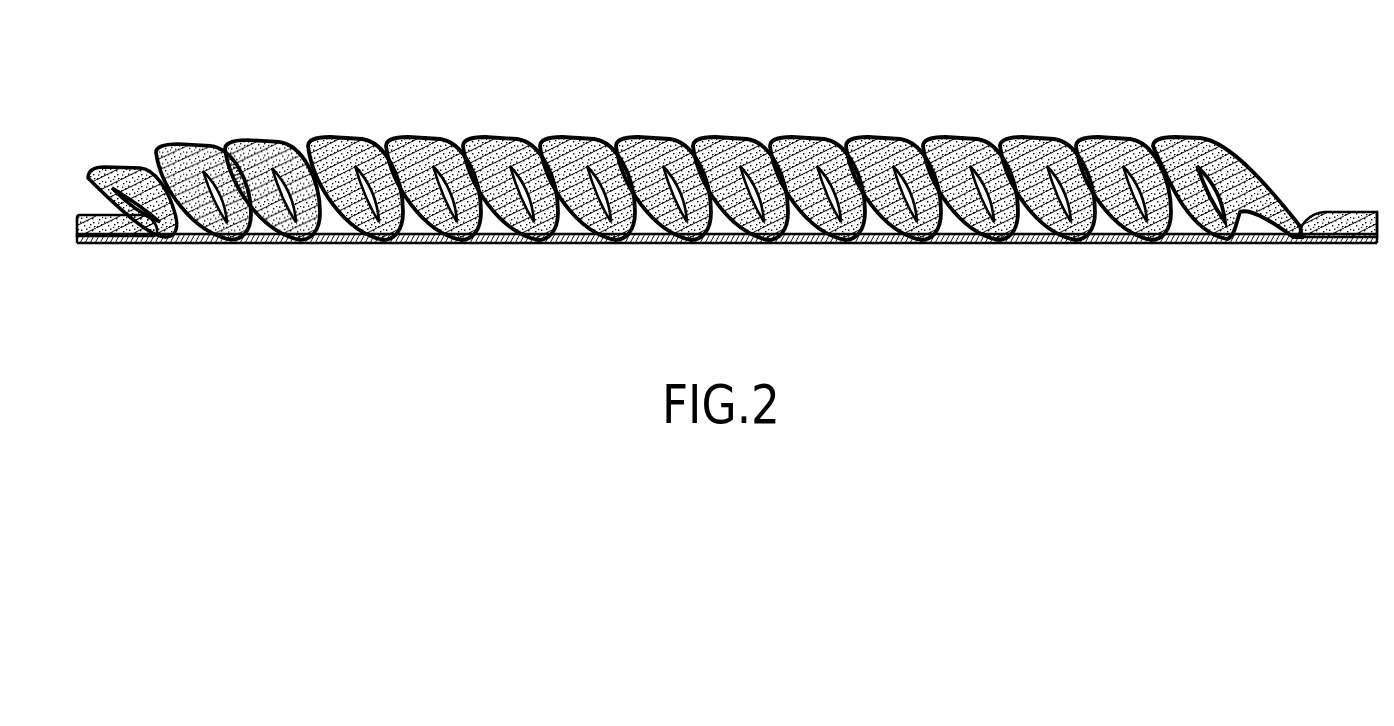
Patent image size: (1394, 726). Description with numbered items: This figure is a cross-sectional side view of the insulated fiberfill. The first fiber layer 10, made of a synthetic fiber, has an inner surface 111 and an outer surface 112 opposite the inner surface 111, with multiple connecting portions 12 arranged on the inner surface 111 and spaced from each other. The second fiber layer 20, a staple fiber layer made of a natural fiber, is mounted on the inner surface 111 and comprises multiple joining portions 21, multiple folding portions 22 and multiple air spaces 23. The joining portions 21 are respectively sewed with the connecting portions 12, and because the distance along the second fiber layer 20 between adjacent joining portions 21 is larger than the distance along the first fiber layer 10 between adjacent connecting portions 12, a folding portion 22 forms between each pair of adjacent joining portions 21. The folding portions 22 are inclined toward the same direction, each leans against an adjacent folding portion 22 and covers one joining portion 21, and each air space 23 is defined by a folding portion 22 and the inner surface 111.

The first fiber layer 10 is at (727, 269).
The inner surface 111 is at (955, 232).
The outer surface 112 is at (1197, 238).
The connecting portions 12 is at (993, 237).
The second fiber layer 20 is at (727, 166).
The joining portions 21 is at (825, 236).
The folding portions 22 is at (878, 163).
The air spaces 23 is at (907, 180).